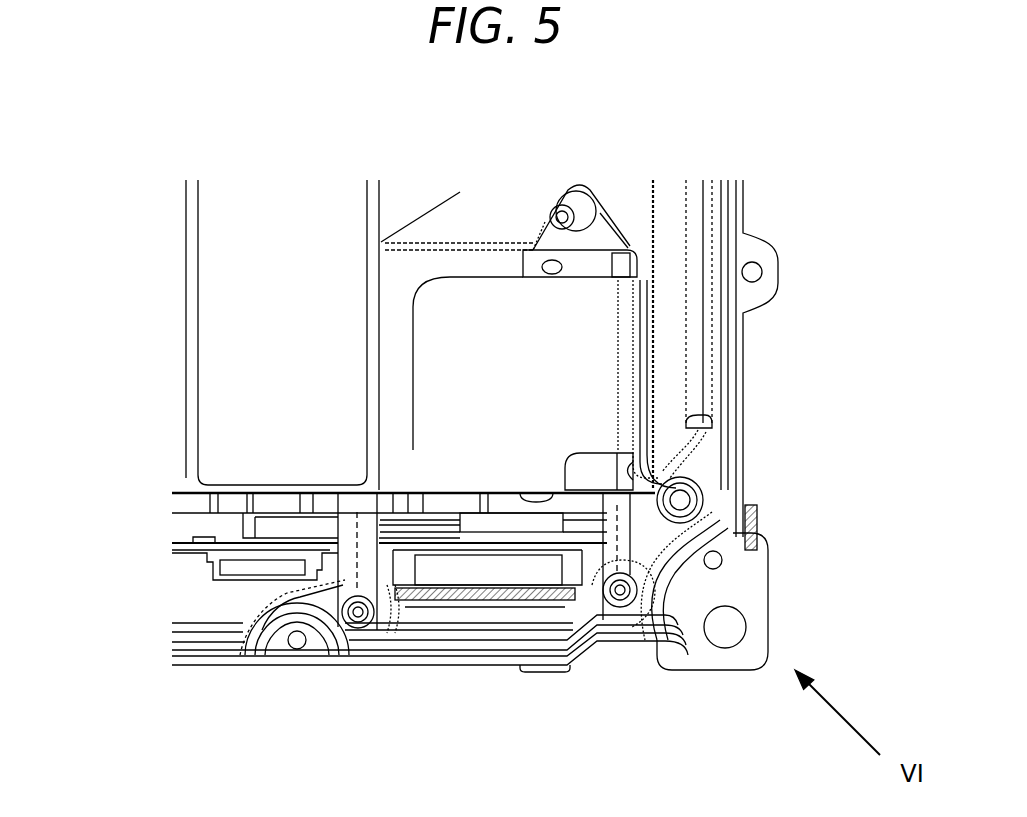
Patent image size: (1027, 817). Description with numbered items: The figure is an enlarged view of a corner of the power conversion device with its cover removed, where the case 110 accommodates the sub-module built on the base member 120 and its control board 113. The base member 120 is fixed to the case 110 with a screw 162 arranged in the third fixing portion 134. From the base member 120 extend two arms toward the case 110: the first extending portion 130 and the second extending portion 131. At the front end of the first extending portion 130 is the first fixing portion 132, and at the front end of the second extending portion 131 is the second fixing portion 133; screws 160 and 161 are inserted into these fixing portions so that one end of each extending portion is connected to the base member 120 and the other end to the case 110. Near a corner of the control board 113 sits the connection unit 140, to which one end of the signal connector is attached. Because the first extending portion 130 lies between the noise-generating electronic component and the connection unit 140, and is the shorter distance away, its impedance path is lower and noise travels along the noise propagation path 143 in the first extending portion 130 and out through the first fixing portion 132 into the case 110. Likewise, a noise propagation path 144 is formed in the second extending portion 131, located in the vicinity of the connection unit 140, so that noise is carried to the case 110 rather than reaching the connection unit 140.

The case 110 is at (747, 377).
The control board 113 is at (178, 551).
The base member 120 is at (655, 247).
The first extending portion 130 is at (250, 655).
The second extending portion 131 is at (657, 550).
The first fixing portion 132 is at (323, 657).
The second fixing portion 133 is at (622, 640).
The third fixing portion 134 is at (703, 512).
The connection unit 140 is at (462, 570).
The noise propagation path 143 is at (353, 527).
The noise propagation path 144 is at (587, 480).
The screw 160 is at (365, 633).
The screw 161 is at (650, 607).
The screw 162 is at (683, 500).